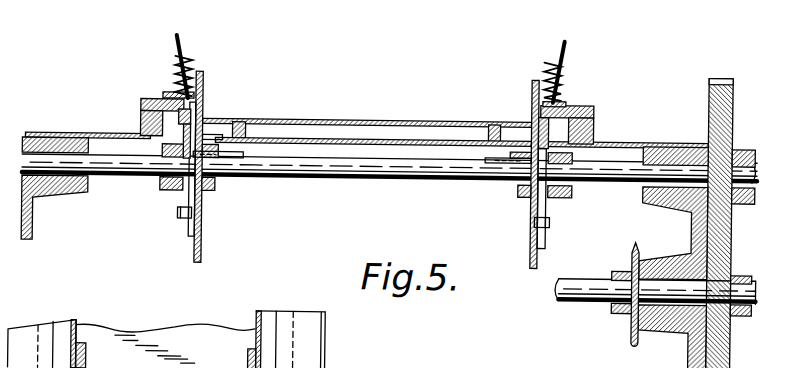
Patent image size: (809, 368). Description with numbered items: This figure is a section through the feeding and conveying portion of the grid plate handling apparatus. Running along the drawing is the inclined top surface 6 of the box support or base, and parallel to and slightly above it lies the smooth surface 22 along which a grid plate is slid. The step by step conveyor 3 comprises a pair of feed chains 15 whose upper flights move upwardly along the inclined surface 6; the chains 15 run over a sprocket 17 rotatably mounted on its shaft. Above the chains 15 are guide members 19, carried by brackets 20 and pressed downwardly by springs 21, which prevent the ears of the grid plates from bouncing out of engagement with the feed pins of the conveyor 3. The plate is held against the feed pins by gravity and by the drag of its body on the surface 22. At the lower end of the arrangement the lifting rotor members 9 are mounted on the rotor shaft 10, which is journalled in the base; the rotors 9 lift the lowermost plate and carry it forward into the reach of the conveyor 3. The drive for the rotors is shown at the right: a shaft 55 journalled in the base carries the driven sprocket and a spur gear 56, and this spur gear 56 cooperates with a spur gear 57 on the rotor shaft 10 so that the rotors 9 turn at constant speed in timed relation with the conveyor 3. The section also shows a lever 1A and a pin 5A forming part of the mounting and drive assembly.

The lever 1A is at (176, 34).
The step by step conveyor 3 is at (202, 116).
The inclined top surface 6 is at (88, 133).
The lifting rotor members 9 is at (202, 84).
The rotor shaft 10 is at (638, 179).
The feed chains 15 is at (178, 215).
The sprocket 17 is at (183, 196).
The guide members 19 is at (165, 91).
The brackets 20 is at (138, 113).
The springs 21 is at (187, 74).
The smooth surface 22 is at (348, 115).
The shaft 55 is at (583, 295).
The spur gear 56 is at (722, 309).
The spur gear 57 is at (728, 70).
The pin 5A is at (637, 317).